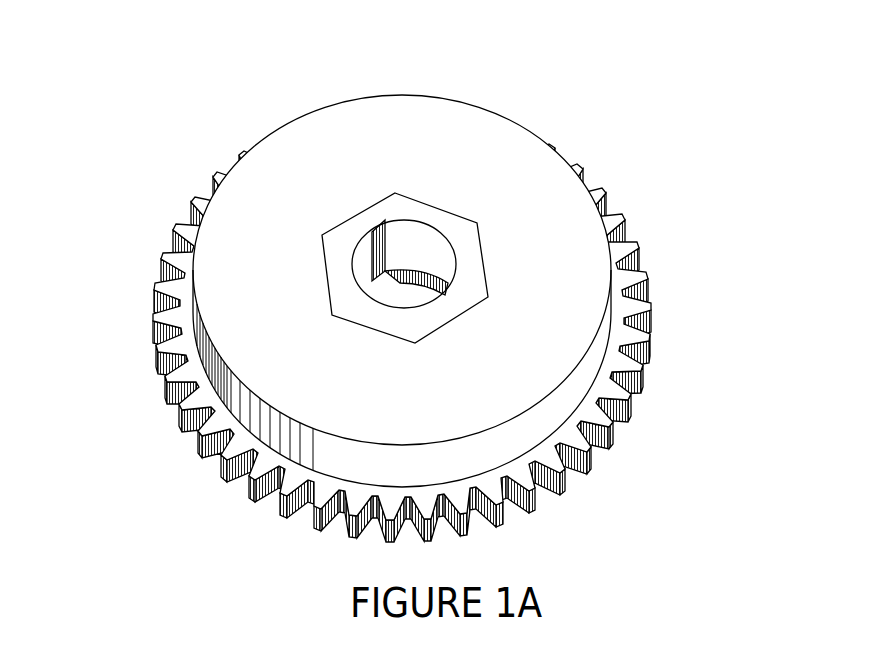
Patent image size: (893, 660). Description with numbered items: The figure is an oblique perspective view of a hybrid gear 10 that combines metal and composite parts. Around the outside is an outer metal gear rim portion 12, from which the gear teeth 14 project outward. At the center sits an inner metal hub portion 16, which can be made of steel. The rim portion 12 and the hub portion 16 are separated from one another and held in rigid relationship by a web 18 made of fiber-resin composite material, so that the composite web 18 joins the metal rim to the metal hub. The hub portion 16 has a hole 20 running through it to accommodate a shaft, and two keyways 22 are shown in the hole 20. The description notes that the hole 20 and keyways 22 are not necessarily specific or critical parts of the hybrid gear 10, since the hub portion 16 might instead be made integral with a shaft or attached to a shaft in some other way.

The hybrid gear 10 is at (301, 94).
The gear rim portion 12 is at (633, 240).
The gear teeth 14 is at (642, 375).
The hub portion 16 is at (350, 298).
The web 18 is at (347, 385).
The hole 20 is at (418, 280).
The keyways 22 is at (373, 268).